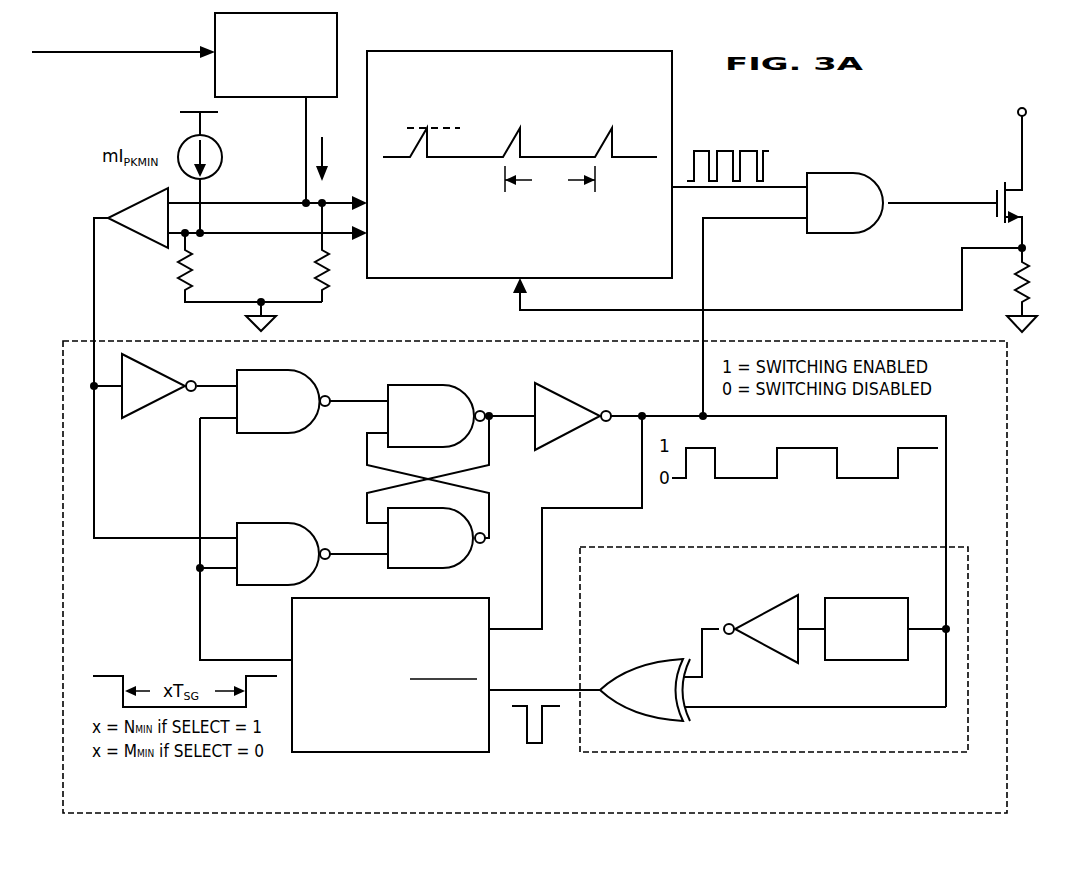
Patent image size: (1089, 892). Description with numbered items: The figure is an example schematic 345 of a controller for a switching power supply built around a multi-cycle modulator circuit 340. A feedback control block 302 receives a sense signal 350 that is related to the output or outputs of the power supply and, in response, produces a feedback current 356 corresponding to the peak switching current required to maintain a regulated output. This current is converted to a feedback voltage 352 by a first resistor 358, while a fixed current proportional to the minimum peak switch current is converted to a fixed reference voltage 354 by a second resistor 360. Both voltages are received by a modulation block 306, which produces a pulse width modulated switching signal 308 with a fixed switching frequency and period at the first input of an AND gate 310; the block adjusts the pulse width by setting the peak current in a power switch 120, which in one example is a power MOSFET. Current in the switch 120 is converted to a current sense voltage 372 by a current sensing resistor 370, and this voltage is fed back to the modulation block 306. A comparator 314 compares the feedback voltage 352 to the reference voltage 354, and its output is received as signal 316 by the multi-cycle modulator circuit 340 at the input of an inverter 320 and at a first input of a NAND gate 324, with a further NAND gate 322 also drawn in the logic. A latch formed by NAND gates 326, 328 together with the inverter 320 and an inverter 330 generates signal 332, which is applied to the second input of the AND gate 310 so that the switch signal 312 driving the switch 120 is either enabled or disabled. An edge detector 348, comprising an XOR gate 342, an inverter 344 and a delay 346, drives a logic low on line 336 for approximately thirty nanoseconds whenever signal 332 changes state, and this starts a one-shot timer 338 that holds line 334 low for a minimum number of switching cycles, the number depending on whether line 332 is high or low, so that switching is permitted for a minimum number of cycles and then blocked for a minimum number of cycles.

The switch S1 120 is at (1010, 175).
The feedback control block 302 is at (343, 30).
The modulation block 306 is at (678, 118).
The pulse width modulated switching signal 308 is at (778, 172).
The AND gate 310 is at (845, 203).
The switch signal 312 is at (897, 208).
The comparator 314 is at (122, 208).
The signal 316 is at (92, 292).
The inverter 320 is at (165, 386).
The NAND gate 322 is at (294, 401).
The NAND gate 324 is at (292, 554).
The NAND gate 326 is at (451, 461).
The NAND gate 328 is at (436, 538).
The inverter 330 is at (740, 545).
The signal 332 is at (740, 228).
The line 334 is at (192, 634).
The line 336 is at (516, 688).
The one-shot timer 338 is at (385, 758).
The multi-cycle modulator circuit 340 is at (220, 816).
The XOR gate 342 is at (773, 675).
The inverter 344 is at (774, 629).
The schematic 345 is at (914, 64).
The delay 346 is at (858, 667).
The edge detector 348 is at (825, 753).
The sense signal 350 is at (155, 44).
The voltage VFB 352 is at (262, 180).
The reference voltage VIPKMIN 354 is at (257, 240).
The feedback current IFB 356 is at (351, 124).
The resistor R1 358 is at (338, 283).
The resistor R2 360 is at (175, 290).
The current sensing resistor Rs 370 is at (1033, 267).
The current sense voltage VIS1 372 is at (812, 305).